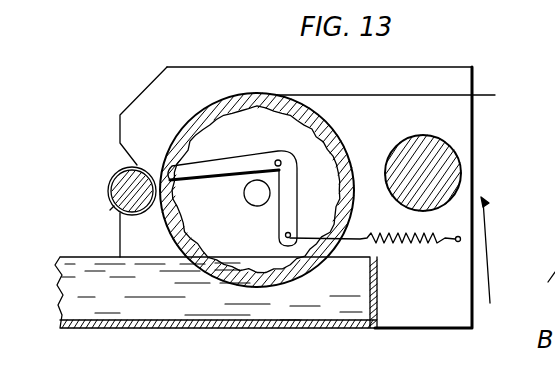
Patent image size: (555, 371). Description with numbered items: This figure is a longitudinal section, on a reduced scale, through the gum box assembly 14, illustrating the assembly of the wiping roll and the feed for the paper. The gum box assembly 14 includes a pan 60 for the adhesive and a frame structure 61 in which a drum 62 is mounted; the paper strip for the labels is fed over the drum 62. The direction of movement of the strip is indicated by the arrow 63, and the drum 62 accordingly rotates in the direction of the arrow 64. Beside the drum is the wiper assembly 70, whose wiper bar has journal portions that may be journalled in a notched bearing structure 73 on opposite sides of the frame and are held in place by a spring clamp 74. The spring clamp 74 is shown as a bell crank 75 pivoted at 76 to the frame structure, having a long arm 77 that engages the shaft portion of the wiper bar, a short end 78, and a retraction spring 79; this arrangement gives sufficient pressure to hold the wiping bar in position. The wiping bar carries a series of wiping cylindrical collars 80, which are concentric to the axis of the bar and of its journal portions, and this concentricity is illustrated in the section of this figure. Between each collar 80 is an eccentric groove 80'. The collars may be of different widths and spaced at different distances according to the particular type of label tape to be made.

The gum box assembly 14 is at (127, 101).
The wiper assembly 70 is at (114, 141).
The frame structure 61 is at (438, 124).
The drum 62 is at (338, 133).
The arrow 64 is at (362, 159).
The arrow 63 is at (504, 250).
The spring clamp 74 is at (268, 149).
The bell crank 75 is at (271, 152).
The pivot 76 is at (281, 160).
The long arm 77 is at (188, 170).
The short end 78 is at (288, 217).
The retraction spring 79 is at (408, 240).
The wiping cylindrical collar 80 is at (113, 179).
The eccentric groove 80' is at (103, 191).
The notched bearing structure 73 is at (110, 210).
The pan 60 is at (155, 307).